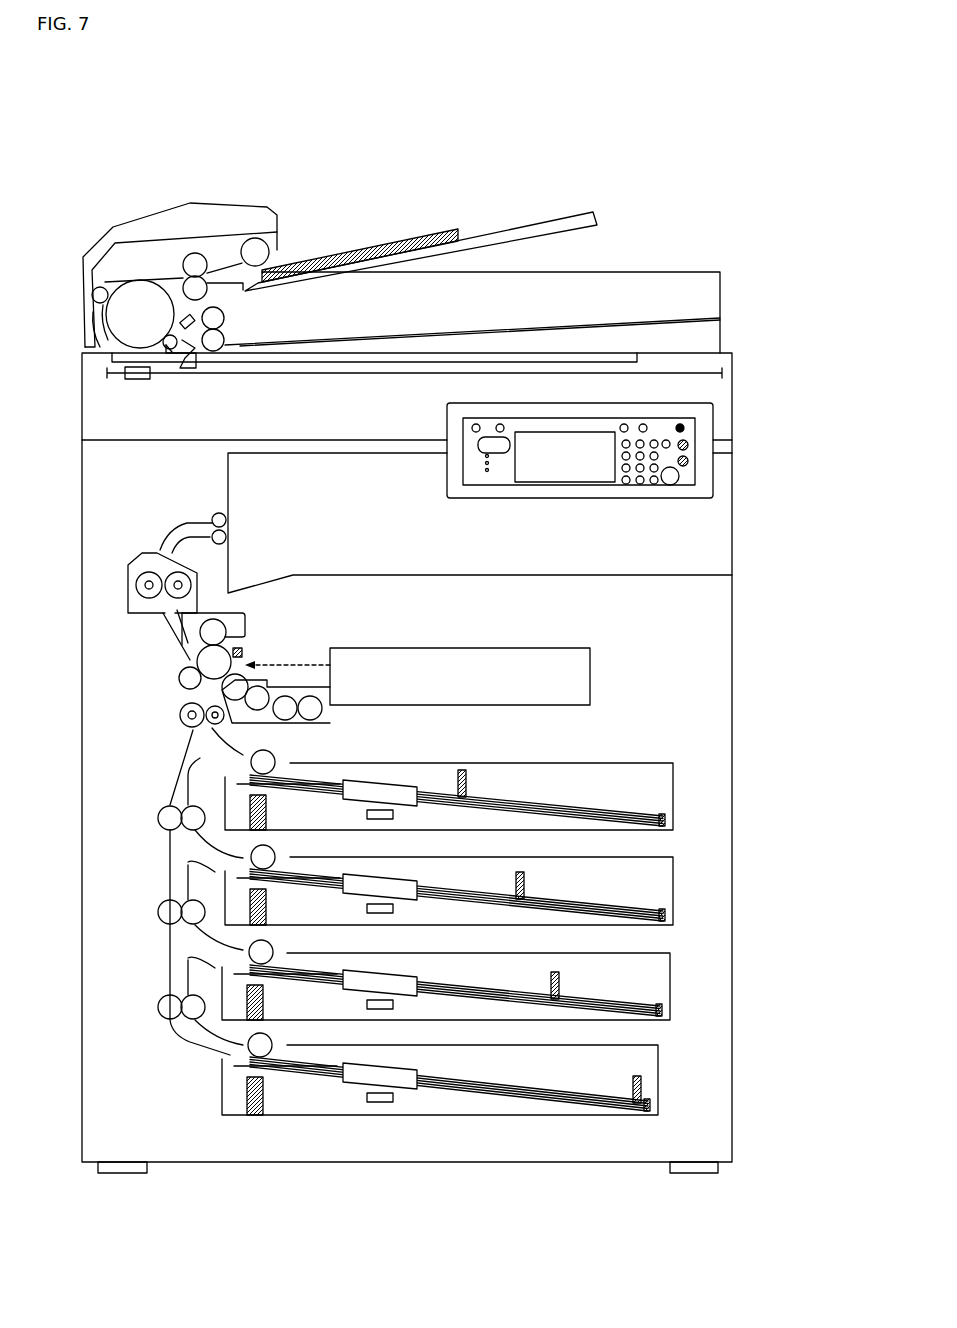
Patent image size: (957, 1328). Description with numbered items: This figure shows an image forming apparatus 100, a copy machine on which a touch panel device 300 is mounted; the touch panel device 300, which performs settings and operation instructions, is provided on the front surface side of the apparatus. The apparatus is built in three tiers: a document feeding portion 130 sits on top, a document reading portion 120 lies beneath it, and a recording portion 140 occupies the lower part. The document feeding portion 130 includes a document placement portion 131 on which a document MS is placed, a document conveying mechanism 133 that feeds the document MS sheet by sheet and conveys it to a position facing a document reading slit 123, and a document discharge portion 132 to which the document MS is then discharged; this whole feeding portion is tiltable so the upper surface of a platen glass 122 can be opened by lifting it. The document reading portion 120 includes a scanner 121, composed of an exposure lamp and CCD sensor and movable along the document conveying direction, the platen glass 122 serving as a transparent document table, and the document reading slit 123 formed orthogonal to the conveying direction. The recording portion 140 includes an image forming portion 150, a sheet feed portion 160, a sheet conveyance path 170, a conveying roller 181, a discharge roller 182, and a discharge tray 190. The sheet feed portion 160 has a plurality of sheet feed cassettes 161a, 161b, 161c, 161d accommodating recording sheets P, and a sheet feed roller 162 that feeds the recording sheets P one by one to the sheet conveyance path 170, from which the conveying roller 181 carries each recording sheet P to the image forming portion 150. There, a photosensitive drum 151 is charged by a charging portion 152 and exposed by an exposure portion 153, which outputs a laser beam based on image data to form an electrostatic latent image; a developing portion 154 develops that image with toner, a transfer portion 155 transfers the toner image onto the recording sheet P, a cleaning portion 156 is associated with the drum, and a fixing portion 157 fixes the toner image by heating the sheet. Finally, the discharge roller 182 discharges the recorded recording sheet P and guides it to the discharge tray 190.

The image forming apparatus 100 is at (80, 190).
The document feeding portion 130 is at (302, 212).
The document conveying mechanism 133 is at (215, 205).
The document placement portion 131 is at (563, 212).
The document MS is at (415, 230).
The document discharge portion 132 is at (482, 332).
The document reading portion 120 is at (737, 383).
The platen glass 122 is at (562, 356).
The scanner 121 is at (147, 382).
The document reading slit 123 is at (170, 358).
The touch panel device 300 is at (716, 433).
The recording portion 140 is at (737, 638).
The discharge tray 190 is at (440, 575).
The discharge roller 182 is at (227, 522).
The fixing portion 157 is at (200, 583).
The image forming portion 150 is at (332, 635).
The cleaning portion 156 is at (245, 622).
The photosensitive drum 151 is at (190, 660).
The charging portion 152 is at (246, 655).
The transfer portion 155 is at (180, 680).
The exposure portion 153 is at (550, 686).
The developing portion 154 is at (325, 718).
The sheet conveyance path 170 is at (168, 752).
The conveying roller 181 is at (180, 715).
The sheet feed portion 160 is at (707, 773).
The sheet feed cassette 161a is at (673, 800).
The sheet feed cassette 161b is at (673, 897).
The sheet feed cassette 161c is at (670, 990).
The sheet feed cassette 161d is at (658, 1085).
The sheet feed roller 162 is at (275, 760).
The recording sheet P is at (437, 783).